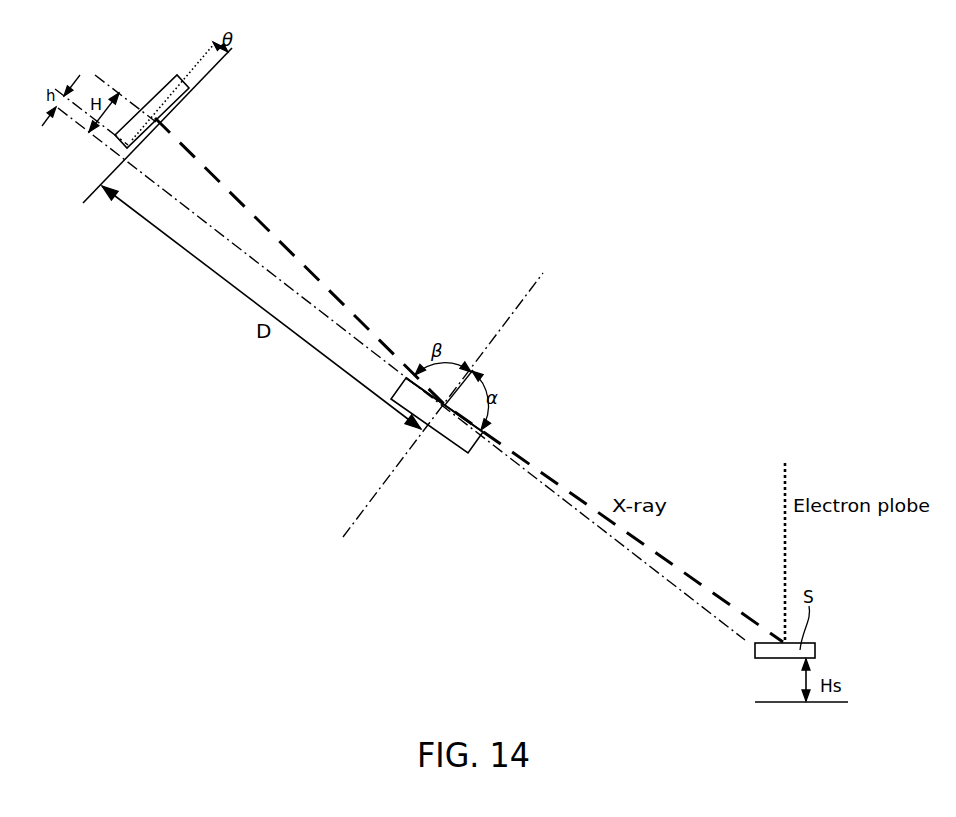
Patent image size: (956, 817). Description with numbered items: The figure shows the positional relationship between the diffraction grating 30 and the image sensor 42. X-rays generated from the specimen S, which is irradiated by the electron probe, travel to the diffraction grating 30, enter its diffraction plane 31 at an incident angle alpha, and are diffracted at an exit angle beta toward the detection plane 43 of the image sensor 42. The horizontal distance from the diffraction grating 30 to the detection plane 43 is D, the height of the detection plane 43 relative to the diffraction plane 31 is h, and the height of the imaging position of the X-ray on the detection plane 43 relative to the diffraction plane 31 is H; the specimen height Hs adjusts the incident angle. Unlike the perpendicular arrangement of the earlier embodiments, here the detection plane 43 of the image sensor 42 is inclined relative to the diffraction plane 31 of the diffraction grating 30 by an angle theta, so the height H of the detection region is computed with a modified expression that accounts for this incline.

The diffraction grating 30 is at (470, 452).
The diffraction plane 31 is at (466, 402).
The image sensor 42 is at (155, 95).
The detection plane 43 is at (178, 107).